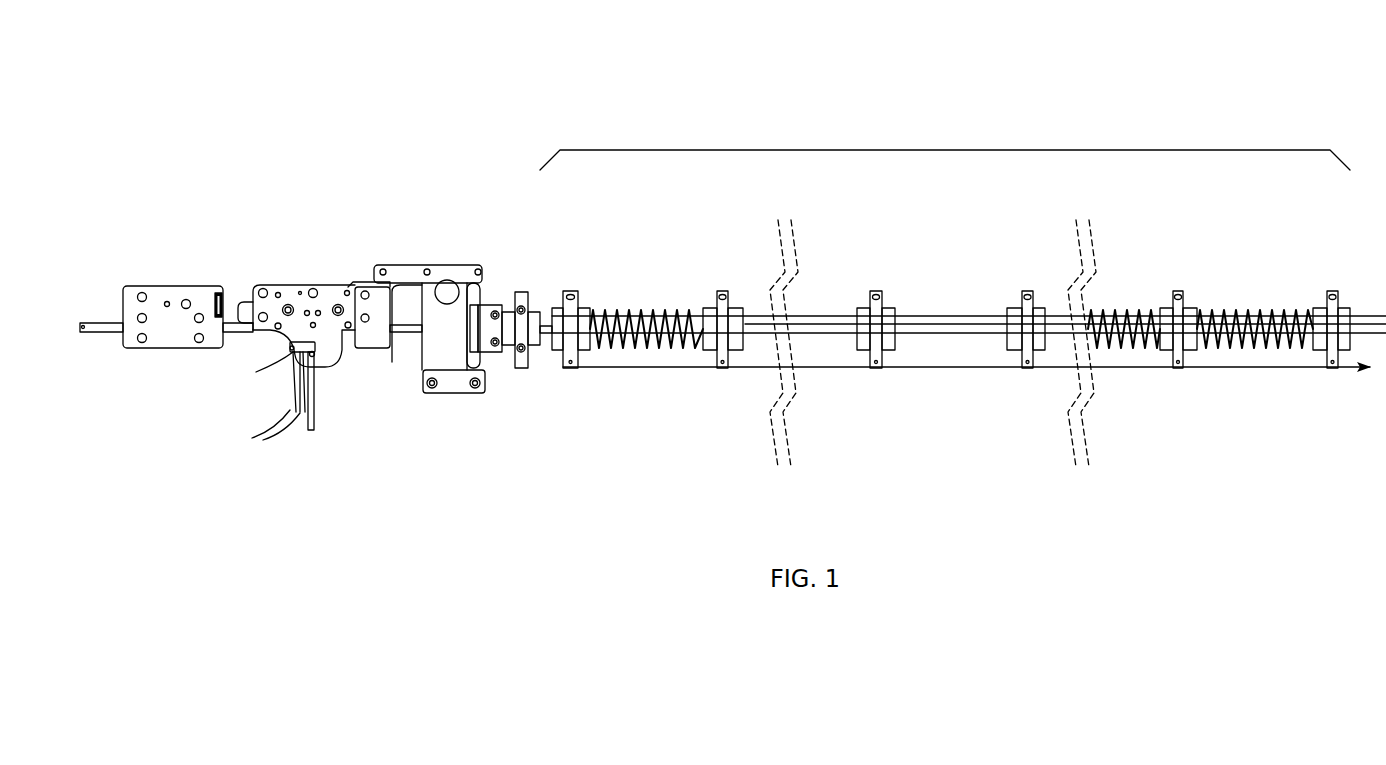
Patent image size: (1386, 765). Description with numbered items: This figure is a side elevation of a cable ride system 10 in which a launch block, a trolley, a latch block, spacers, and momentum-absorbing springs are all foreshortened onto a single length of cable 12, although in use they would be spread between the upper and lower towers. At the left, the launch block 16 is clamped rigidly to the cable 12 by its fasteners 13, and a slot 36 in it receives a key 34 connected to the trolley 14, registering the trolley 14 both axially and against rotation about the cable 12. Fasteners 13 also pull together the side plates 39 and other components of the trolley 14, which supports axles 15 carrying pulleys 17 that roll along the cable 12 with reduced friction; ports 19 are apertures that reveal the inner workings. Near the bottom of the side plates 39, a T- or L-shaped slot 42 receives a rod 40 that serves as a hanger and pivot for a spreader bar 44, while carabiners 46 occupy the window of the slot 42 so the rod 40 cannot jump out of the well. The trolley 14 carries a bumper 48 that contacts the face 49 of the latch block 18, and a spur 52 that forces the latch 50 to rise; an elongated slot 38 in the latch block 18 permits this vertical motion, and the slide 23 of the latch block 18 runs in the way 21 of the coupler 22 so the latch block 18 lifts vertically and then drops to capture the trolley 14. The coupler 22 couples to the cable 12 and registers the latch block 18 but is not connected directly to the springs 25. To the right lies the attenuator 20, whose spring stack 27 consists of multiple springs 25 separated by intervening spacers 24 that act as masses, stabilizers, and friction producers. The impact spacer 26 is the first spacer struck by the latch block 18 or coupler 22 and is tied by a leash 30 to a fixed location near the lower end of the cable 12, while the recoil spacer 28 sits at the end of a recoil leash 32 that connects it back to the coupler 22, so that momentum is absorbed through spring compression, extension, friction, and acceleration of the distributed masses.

The system 10 is at (168, 78).
The cable 12 is at (100, 312).
The fasteners 13 is at (143, 291).
The trolley 14 is at (321, 291).
The axles 15 is at (289, 305).
The launch block 16 is at (187, 283).
The pulleys 17 is at (276, 329).
The latch block 18 is at (452, 262).
The ports 19 is at (348, 334).
The attenuator 20 is at (544, 463).
The way 21 is at (500, 303).
The coupler 22 is at (512, 297).
The slide 23 is at (484, 303).
The spacers 24 is at (720, 295).
The springs 25 is at (637, 309).
The impact spacer 26 is at (580, 298).
The spring stack 27 is at (955, 150).
The recoil spacer 28 is at (1020, 294).
The leash 30 is at (918, 373).
The recoil leash 32 is at (827, 311).
The key 34 is at (246, 300).
The slot 36 is at (228, 288).
The slot 38 is at (417, 304).
The side plates 39 is at (302, 289).
The rod 40 is at (287, 360).
The slot 42 is at (284, 347).
The spreader bar 44 is at (311, 435).
The carabiners 46 is at (261, 417).
The bumper 48 is at (375, 350).
The face 49 is at (425, 374).
The latch 50 is at (414, 265).
The spur 52 is at (352, 283).